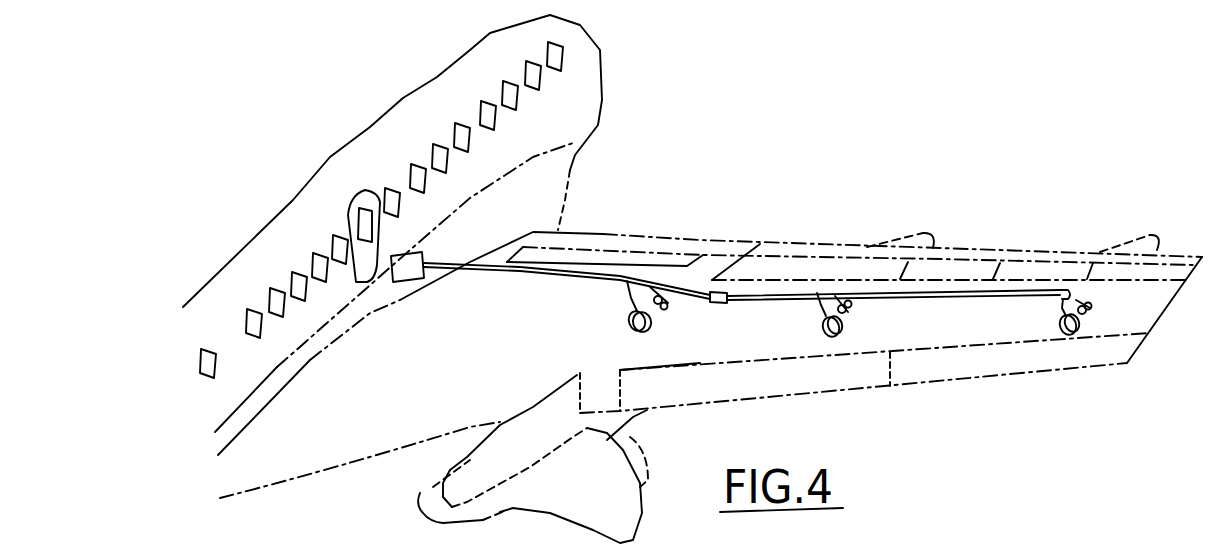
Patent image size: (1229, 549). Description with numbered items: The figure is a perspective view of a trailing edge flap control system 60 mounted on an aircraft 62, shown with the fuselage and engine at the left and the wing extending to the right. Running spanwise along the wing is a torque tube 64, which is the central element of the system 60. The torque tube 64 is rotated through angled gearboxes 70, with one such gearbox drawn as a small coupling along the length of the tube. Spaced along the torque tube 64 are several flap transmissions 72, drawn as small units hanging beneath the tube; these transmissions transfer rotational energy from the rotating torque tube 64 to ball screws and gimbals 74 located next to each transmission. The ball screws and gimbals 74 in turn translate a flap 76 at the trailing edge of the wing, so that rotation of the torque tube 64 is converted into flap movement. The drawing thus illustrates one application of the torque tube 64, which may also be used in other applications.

The trailing edge flap control system 60 is at (767, 230).
The aircraft 62 is at (600, 125).
The torque tube 64 is at (917, 298).
The angled gearboxes 70 is at (725, 301).
The flap transmissions 72 is at (633, 323).
The ball screws and gimbals 74 is at (668, 290).
The flap 76 is at (1080, 257).